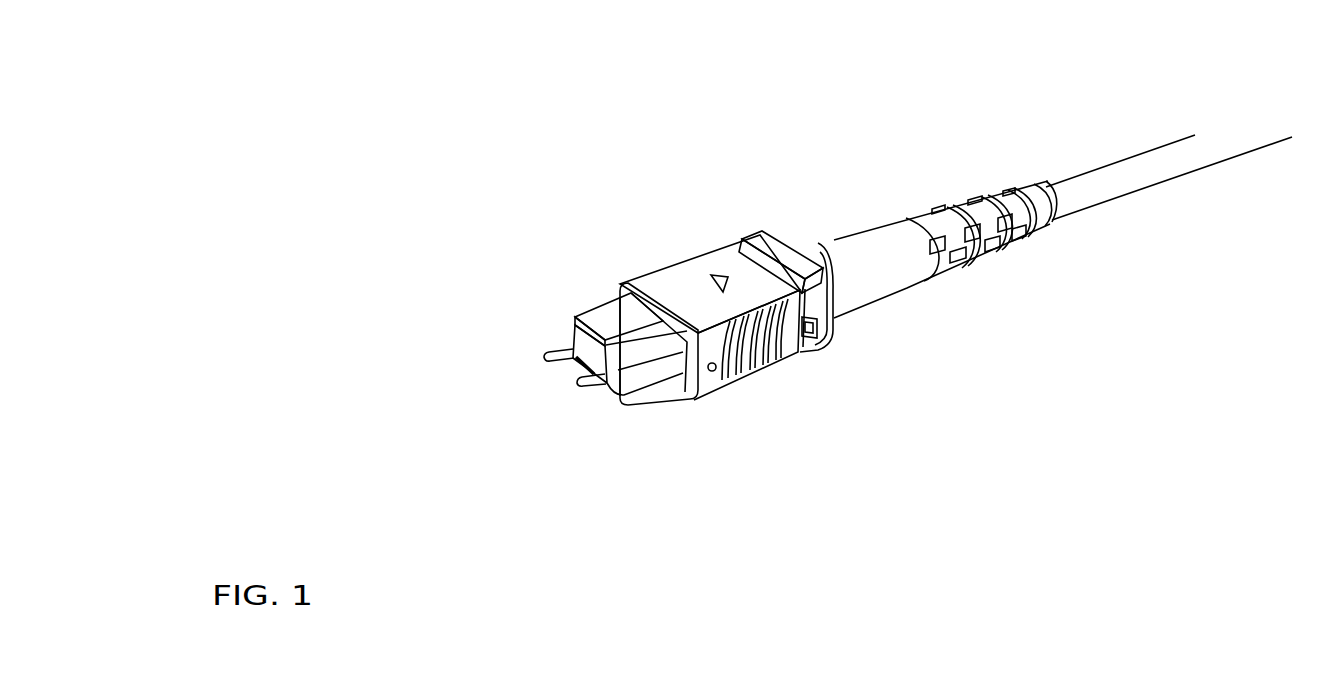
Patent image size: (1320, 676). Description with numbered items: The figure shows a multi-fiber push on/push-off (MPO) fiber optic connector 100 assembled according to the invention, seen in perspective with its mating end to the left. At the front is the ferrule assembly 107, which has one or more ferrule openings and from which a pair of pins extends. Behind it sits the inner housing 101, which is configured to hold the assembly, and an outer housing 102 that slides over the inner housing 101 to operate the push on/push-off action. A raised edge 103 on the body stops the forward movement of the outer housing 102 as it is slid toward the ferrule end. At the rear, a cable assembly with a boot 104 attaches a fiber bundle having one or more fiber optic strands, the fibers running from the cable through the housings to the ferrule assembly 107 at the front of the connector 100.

The connector 100 is at (361, 135).
The inner housing 101 is at (617, 310).
The outer housing 102 is at (690, 277).
The raised edge 103 is at (754, 248).
The boot 104 is at (872, 252).
The ferrule assembly 107 is at (568, 345).